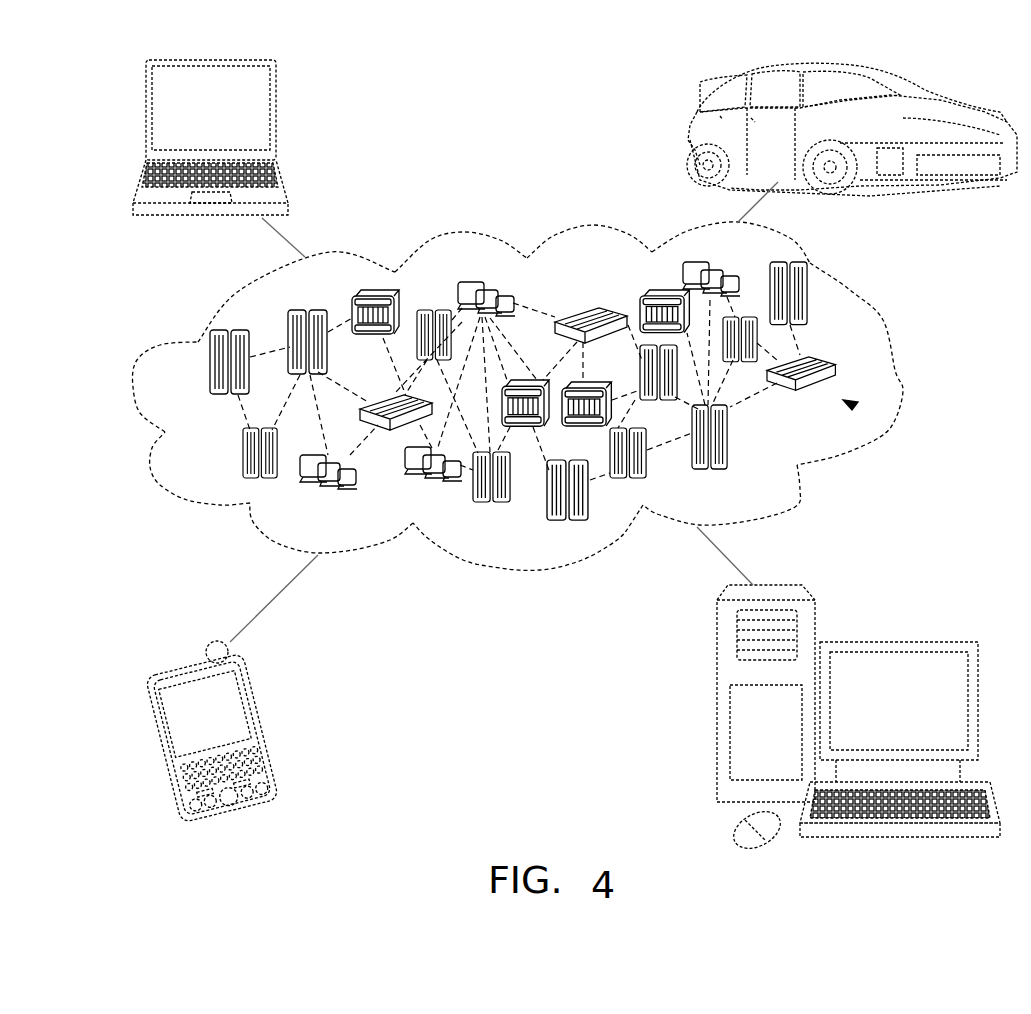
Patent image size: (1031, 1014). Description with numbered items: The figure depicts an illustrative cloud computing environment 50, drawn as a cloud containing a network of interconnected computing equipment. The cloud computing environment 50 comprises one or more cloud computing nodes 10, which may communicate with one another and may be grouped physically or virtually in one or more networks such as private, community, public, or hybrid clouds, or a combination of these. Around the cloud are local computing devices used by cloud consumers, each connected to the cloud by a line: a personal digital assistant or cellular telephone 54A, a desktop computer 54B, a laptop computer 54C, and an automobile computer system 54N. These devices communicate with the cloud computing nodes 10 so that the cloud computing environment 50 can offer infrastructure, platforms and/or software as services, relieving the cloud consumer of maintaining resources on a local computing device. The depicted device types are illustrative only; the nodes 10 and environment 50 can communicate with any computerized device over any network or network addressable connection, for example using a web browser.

The cloud computing environment 50 is at (897, 371).
The cloud computing node 10 is at (855, 406).
The personal digital assistant (PDA) or cellular telephone 54A is at (268, 724).
The desktop computer 54B is at (895, 640).
The laptop computer 54C is at (277, 118).
The automobile computer system 54N is at (690, 132).